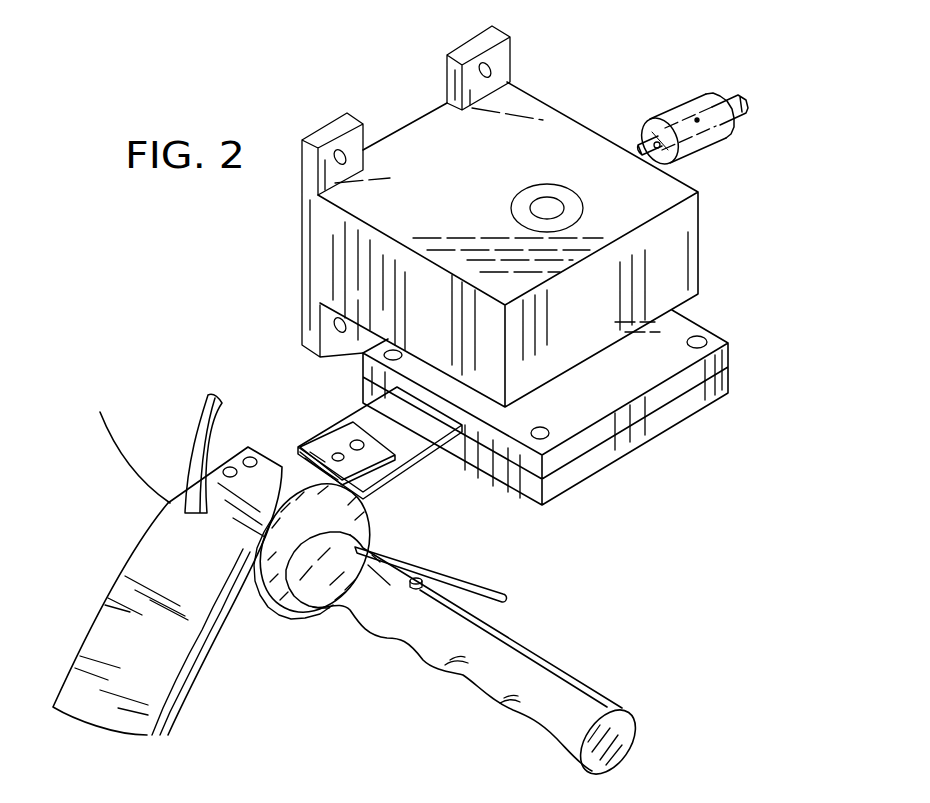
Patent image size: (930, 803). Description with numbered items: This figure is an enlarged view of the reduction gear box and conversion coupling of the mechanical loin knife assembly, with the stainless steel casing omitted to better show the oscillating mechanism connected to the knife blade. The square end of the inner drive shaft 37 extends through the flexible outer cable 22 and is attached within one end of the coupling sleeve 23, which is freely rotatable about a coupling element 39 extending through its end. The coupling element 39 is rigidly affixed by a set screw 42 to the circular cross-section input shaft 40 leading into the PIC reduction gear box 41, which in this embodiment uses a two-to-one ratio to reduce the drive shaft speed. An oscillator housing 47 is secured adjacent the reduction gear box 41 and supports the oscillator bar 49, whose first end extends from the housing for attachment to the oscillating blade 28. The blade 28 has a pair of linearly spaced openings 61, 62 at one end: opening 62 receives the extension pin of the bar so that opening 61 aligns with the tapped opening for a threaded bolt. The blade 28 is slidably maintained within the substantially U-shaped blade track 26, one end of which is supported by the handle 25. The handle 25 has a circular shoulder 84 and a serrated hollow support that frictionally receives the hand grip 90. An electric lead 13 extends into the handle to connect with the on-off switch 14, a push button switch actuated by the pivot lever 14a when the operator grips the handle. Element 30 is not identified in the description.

The electric lead 13 is at (118, 455).
The on-off switch 14 is at (410, 588).
The pivot lever 14a is at (457, 577).
The flexible outer cable 22 is at (727, 87).
The coupling sleeve 23 is at (682, 97).
The handle 25 is at (577, 678).
The blade track 26 is at (115, 588).
The oscillating blade 28 is at (338, 445).
The strip 30 is at (192, 430).
The inner drive shaft 37 is at (697, 120).
The coupling element 39 is at (650, 127).
The input shaft 40 is at (640, 147).
The reduction gear box 41 is at (492, 176).
The set screw 42 is at (660, 147).
The oscillator housing 47 is at (632, 380).
The oscillator bar 49 is at (382, 427).
The opening 61 is at (360, 448).
The opening 62 is at (337, 437).
The circular shoulder 84 is at (290, 598).
The hand grip 90 is at (440, 670).